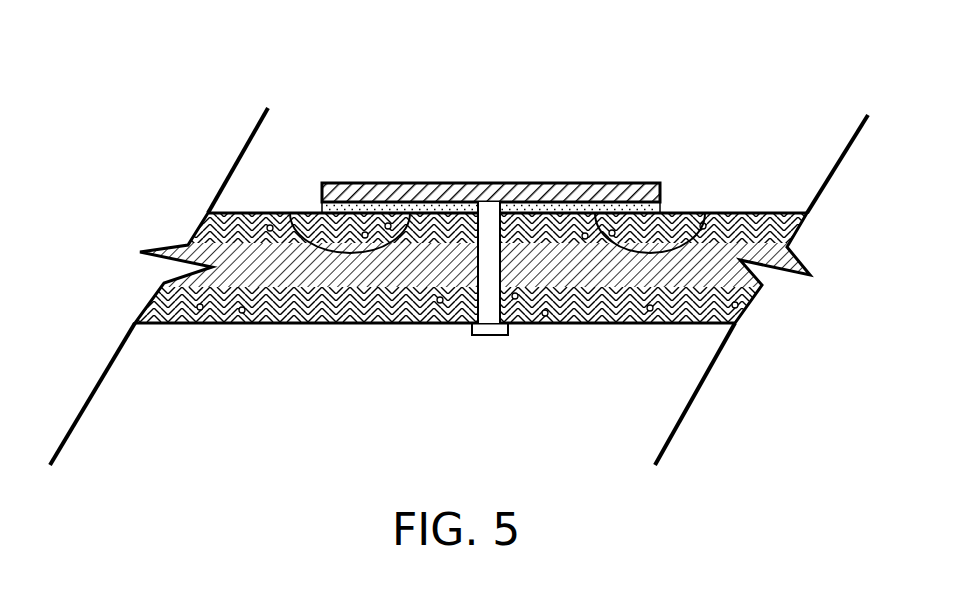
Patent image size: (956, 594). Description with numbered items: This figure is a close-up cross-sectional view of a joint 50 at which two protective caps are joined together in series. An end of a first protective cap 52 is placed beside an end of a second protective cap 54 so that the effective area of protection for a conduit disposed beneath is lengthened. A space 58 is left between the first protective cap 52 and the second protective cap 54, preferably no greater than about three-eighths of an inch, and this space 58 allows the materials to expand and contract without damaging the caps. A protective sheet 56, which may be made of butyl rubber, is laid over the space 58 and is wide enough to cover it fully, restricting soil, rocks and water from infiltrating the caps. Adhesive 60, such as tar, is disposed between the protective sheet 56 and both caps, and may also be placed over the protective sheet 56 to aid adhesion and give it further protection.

The joint 50 is at (459, 235).
The first protective cap 52 is at (610, 325).
The second protective cap 54 is at (298, 323).
The protective sheet 56 is at (612, 183).
The space 58 is at (490, 335).
The adhesive 60 is at (290, 213).